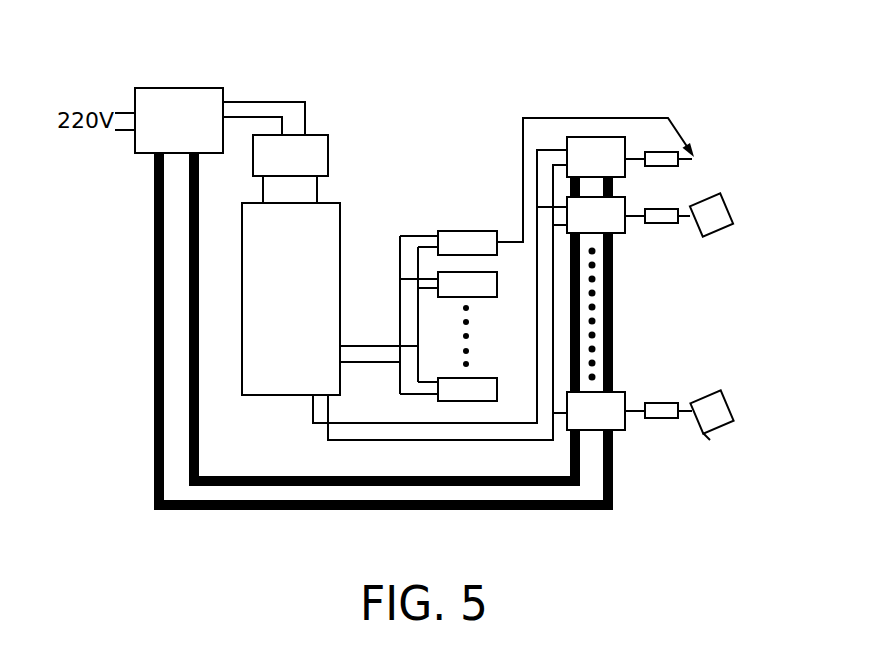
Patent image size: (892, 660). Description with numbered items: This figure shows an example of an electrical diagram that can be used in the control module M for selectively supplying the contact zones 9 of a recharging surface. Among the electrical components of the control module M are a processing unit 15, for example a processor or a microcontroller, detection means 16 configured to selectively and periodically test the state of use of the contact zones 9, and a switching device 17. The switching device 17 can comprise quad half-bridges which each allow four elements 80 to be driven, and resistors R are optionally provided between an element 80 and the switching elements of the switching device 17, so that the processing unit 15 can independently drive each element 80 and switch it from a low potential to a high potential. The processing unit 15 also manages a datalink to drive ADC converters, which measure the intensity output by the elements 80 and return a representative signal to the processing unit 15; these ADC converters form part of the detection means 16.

The processing unit 15 is at (287, 397).
The detection means 16 is at (509, 110).
The switching device 17 is at (600, 128).
The contact zones 9 is at (758, 440).
The element 80 is at (708, 436).
The resistor R is at (658, 419).
The control module M is at (171, 555).
The ADC converter ADC is at (460, 220).